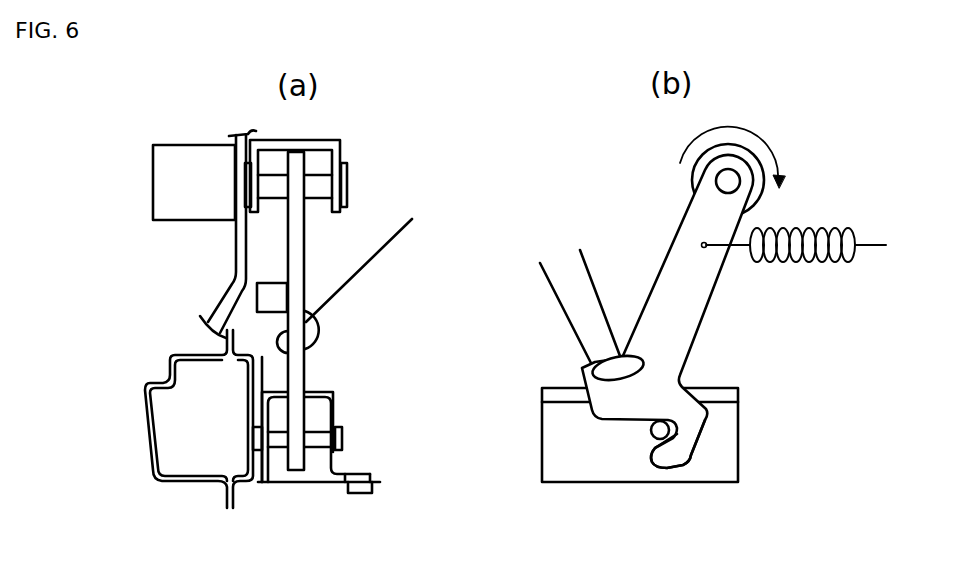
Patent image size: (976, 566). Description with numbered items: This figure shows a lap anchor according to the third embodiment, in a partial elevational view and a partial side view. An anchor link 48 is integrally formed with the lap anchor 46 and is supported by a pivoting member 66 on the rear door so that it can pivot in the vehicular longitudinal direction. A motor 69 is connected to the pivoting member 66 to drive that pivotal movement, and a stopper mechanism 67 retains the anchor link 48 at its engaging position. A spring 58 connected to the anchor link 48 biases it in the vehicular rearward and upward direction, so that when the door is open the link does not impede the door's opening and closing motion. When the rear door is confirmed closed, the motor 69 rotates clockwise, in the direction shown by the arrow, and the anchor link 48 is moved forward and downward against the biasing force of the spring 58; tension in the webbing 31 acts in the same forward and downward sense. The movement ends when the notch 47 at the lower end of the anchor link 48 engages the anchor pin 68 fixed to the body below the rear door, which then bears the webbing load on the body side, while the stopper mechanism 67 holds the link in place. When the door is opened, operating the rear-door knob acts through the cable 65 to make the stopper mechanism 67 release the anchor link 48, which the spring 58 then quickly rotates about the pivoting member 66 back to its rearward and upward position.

The webbing 31 is at (337, 292).
The lap anchor 46 is at (592, 375).
The notch 47 is at (680, 428).
The anchor link 48 is at (682, 315).
The spring 58 is at (813, 226).
The cable 65 is at (240, 286).
The pivoting member 66 is at (315, 187).
The stopper mechanism 67 is at (274, 291).
The anchor pin 68 is at (652, 434).
The motor 69 is at (196, 198).